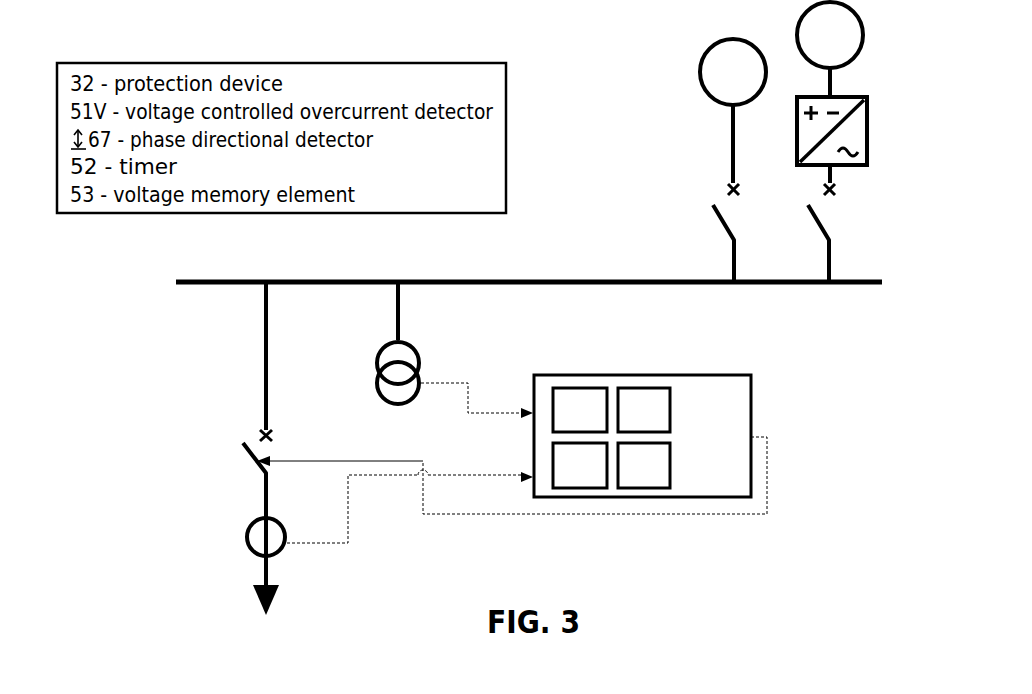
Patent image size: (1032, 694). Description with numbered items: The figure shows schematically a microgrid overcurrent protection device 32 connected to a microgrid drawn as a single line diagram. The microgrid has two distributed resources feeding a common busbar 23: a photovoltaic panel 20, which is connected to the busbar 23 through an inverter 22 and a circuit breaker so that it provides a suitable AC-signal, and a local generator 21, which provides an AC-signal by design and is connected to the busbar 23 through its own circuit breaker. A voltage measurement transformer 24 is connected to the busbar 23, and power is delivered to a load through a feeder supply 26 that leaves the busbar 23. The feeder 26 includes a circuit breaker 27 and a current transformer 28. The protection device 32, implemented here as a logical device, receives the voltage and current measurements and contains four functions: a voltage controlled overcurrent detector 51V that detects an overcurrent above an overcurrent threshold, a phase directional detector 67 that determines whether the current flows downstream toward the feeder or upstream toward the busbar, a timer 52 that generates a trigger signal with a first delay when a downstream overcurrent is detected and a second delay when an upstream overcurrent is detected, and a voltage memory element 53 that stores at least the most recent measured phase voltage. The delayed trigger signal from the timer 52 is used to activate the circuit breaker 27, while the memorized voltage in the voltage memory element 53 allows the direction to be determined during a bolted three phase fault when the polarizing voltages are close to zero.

The photovoltaic panel 20 is at (855, 49).
The local generator 21 is at (714, 153).
The inverter 22 is at (855, 189).
The busbar 23 is at (542, 265).
The voltage measurement transformer 24 is at (383, 357).
The feeder supply 26 is at (246, 356).
The circuit breaker 27 is at (236, 474).
The current transformer 28 is at (245, 566).
The microgrid overcurrent protection device 32 is at (642, 436).
The voltage controlled overcurrent detector 51V is at (580, 410).
The phase directional detector 67 is at (566, 457).
The timer 52 is at (644, 465).
The voltage memory element 53 is at (644, 410).